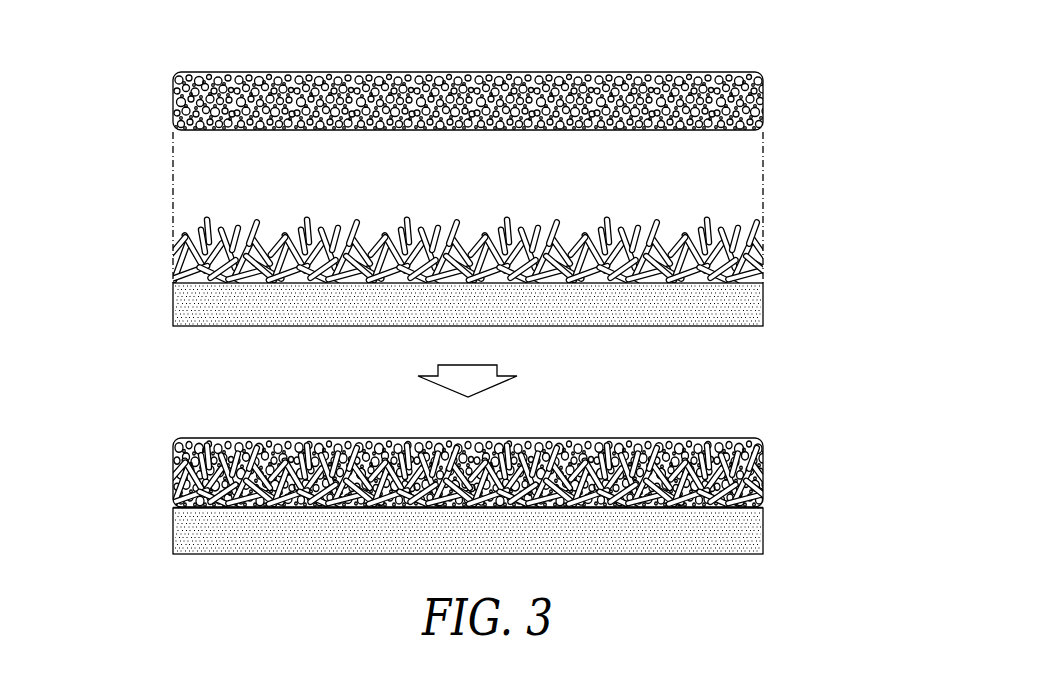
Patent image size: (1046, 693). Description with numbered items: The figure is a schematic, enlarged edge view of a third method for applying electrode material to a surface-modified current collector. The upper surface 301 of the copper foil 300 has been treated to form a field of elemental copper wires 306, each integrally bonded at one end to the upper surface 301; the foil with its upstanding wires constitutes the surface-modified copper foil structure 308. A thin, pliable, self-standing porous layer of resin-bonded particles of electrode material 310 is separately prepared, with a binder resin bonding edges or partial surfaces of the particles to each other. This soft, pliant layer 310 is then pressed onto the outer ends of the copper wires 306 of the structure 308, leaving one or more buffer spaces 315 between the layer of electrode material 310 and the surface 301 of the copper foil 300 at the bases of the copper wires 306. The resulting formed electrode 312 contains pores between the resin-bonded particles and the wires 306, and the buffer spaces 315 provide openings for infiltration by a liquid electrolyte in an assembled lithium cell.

The copper foil 300 is at (765, 300).
The upper surface 301 is at (498, 339).
The copper wires 306 is at (575, 216).
The surface-modified copper foil structure 308 is at (165, 333).
The porous layer of resin-bonded particles of electrode material 310 is at (763, 101).
The formed electrode 312 is at (156, 474).
The buffer spaces 315 is at (185, 501).